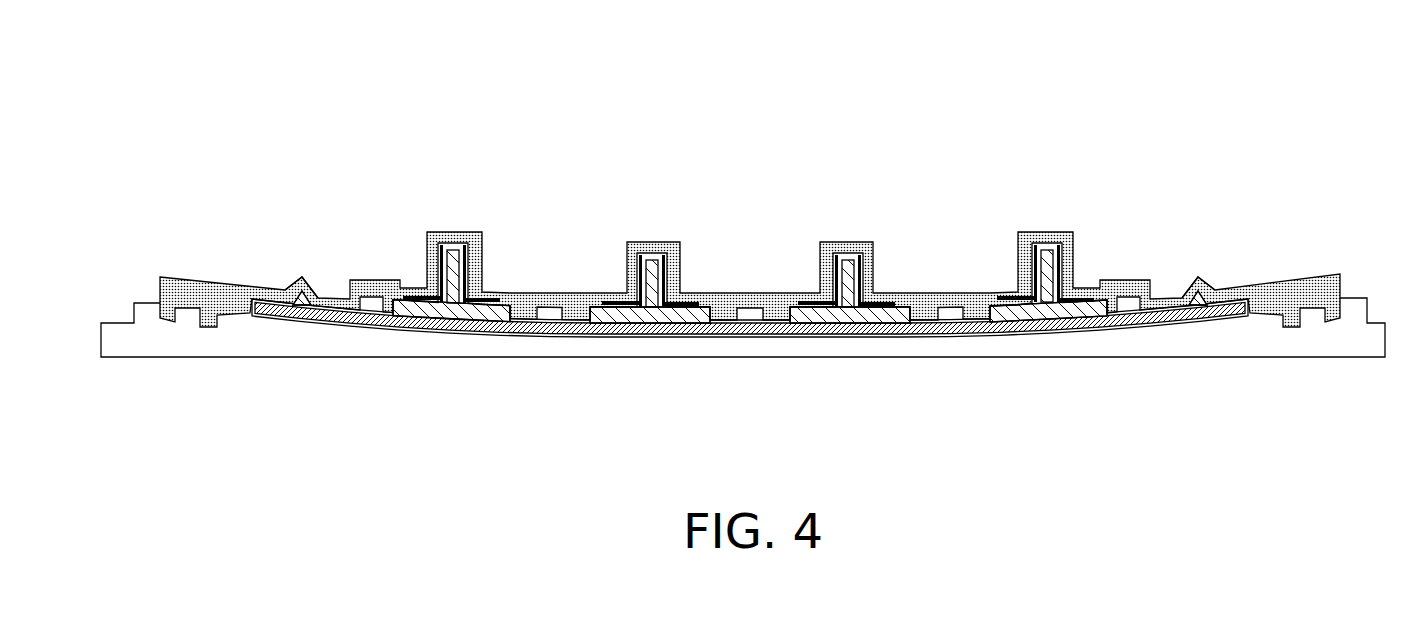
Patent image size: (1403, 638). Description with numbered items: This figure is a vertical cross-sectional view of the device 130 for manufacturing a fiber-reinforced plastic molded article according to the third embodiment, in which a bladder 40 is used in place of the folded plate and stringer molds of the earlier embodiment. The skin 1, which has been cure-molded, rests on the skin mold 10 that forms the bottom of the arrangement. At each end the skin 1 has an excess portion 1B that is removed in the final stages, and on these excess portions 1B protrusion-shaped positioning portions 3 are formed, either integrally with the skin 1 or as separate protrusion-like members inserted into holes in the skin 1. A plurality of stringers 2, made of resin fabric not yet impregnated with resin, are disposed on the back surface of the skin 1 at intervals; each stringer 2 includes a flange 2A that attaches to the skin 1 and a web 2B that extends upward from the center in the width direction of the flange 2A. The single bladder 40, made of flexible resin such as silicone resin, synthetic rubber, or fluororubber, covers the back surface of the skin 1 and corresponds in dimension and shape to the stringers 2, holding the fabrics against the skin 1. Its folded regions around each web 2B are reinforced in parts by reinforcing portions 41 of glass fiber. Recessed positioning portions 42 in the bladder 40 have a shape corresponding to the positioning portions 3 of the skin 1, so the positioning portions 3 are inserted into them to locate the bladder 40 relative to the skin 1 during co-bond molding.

The skin 1 is at (752, 352).
The excess portion 1B is at (270, 320).
The stringer 2 is at (466, 240).
The flange 2A is at (630, 335).
The web 2B is at (652, 256).
The positioning portion 3 is at (302, 306).
The skin mold 10 is at (390, 345).
The bladder 40 is at (888, 243).
The reinforcing portion 41 is at (433, 248).
The positioning portion 42 is at (300, 276).
The device for manufacturing a fiber-reinforced plastic molded article 130 is at (1160, 137).